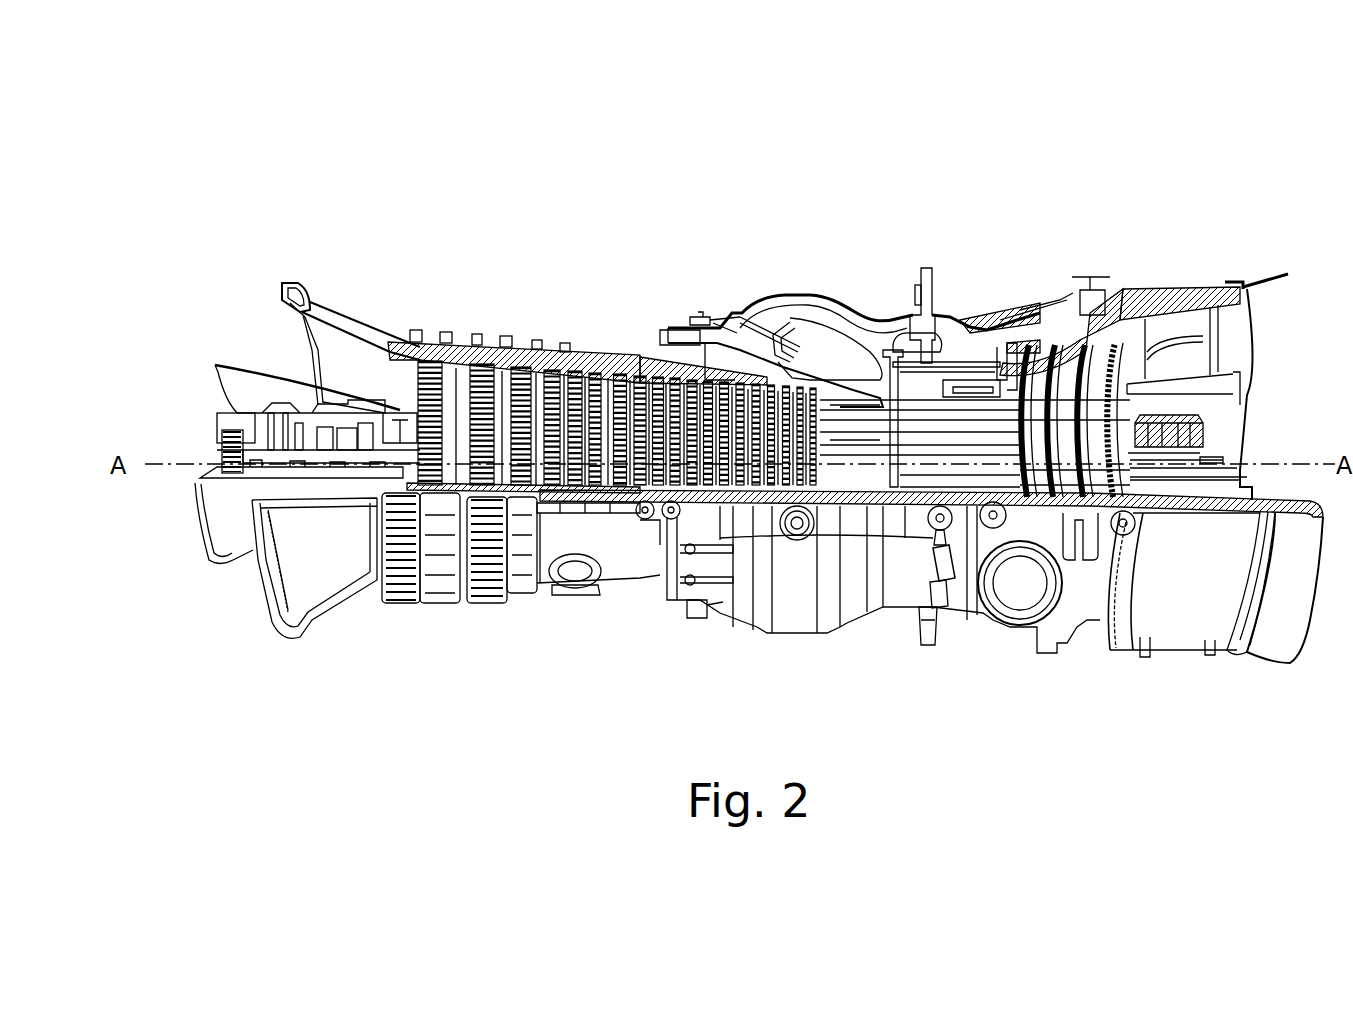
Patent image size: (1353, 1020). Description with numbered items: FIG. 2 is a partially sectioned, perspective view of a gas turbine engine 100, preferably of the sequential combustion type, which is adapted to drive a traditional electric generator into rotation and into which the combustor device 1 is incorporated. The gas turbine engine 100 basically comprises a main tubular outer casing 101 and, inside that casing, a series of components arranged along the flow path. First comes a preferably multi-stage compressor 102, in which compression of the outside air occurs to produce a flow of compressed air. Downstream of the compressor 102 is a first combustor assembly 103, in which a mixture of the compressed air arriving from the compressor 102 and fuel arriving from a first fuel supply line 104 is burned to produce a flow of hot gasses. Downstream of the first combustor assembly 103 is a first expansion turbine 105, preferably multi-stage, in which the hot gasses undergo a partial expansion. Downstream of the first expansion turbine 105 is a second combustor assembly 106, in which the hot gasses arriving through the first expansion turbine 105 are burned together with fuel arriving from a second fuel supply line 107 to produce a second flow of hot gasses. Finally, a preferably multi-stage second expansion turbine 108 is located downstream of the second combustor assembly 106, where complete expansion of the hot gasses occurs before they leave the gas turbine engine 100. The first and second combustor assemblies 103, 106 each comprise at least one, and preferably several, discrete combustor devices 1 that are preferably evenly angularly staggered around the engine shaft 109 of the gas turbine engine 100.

The gas turbine engine 100 is at (236, 215).
The main tubular outer casing 101 is at (840, 298).
The compressor 102 is at (455, 374).
The first combustor assembly 103 is at (773, 287).
The first fuel supply line 104 is at (701, 305).
The first expansion turbine 105 is at (890, 413).
The second combustor assembly 106 is at (963, 335).
The second fuel supply line 107 is at (925, 262).
The second expansion turbine 108 is at (1088, 338).
The engine shaft 109 is at (930, 447).
The combustor device 1 is at (952, 366).